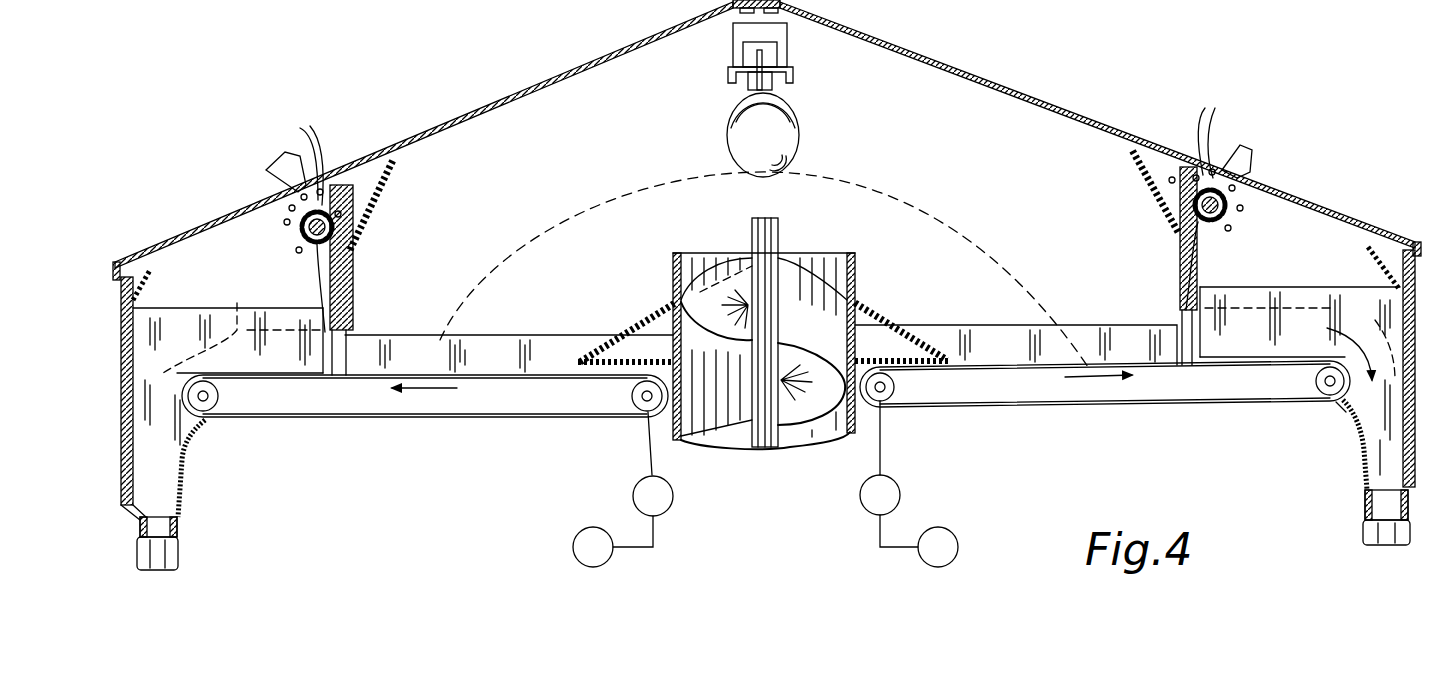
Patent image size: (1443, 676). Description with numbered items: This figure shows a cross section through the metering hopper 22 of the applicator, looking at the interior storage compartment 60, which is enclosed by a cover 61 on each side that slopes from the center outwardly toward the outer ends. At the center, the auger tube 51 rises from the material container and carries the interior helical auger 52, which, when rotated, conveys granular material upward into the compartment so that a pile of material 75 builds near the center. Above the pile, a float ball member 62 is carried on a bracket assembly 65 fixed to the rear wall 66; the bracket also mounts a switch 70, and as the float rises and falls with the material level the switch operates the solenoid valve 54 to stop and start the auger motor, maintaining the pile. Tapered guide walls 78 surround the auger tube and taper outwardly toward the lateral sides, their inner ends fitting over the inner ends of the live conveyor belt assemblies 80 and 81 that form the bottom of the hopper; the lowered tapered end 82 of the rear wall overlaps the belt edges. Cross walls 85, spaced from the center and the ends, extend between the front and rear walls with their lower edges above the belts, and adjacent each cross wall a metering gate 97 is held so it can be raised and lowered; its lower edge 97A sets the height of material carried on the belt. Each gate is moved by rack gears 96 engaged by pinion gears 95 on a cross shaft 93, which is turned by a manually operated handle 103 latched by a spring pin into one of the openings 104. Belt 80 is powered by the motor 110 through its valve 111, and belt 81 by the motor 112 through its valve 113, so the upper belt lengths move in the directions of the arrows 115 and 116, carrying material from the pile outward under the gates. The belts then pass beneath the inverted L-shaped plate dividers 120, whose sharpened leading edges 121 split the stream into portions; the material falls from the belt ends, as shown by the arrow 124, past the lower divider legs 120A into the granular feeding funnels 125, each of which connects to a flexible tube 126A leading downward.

The metering hopper 22 is at (1050, 75).
The auger tube 51 is at (845, 437).
The interior helical auger 52 is at (850, 300).
The solenoid valve 54 is at (706, 258).
The interior storage compartment 60 is at (918, 80).
The cover 61 is at (540, 84).
The float ball member 62 is at (795, 130).
The bracket assembly 65 is at (792, 74).
The rear wall 66 is at (482, 108).
The switch 70 is at (770, 48).
The pile of material 75 is at (880, 192).
The tapered guide walls 78 is at (905, 335).
The conveyor belt assembly 80 is at (1138, 358).
The conveyor belt assembly 81 is at (548, 340).
The lowered tapered end 82 is at (477, 355).
The cross walls 85 is at (398, 178).
The cross shaft 93 is at (300, 230).
The pinion gears 95 is at (312, 245).
The rack gears 96 is at (325, 332).
The metering gate 97 is at (356, 270).
The lower edge of metering gate 97A is at (348, 332).
The manually operated handle 103 is at (275, 167).
The openings 104 is at (756, 149).
The motor 110 is at (902, 494).
The valve 111 is at (956, 556).
The motor 112 is at (675, 498).
The valve 113 is at (606, 558).
The arrow 115 is at (1097, 380).
The arrow 116 is at (428, 390).
The inverted L-shaped plate dividers 120 is at (233, 298).
The lower divider legs 120A is at (155, 462).
The sharpened leading edges 121 is at (335, 372).
The arrow 124 is at (1340, 405).
The granular feeding funnels 125 is at (160, 522).
The flexible tube 126A is at (170, 545).